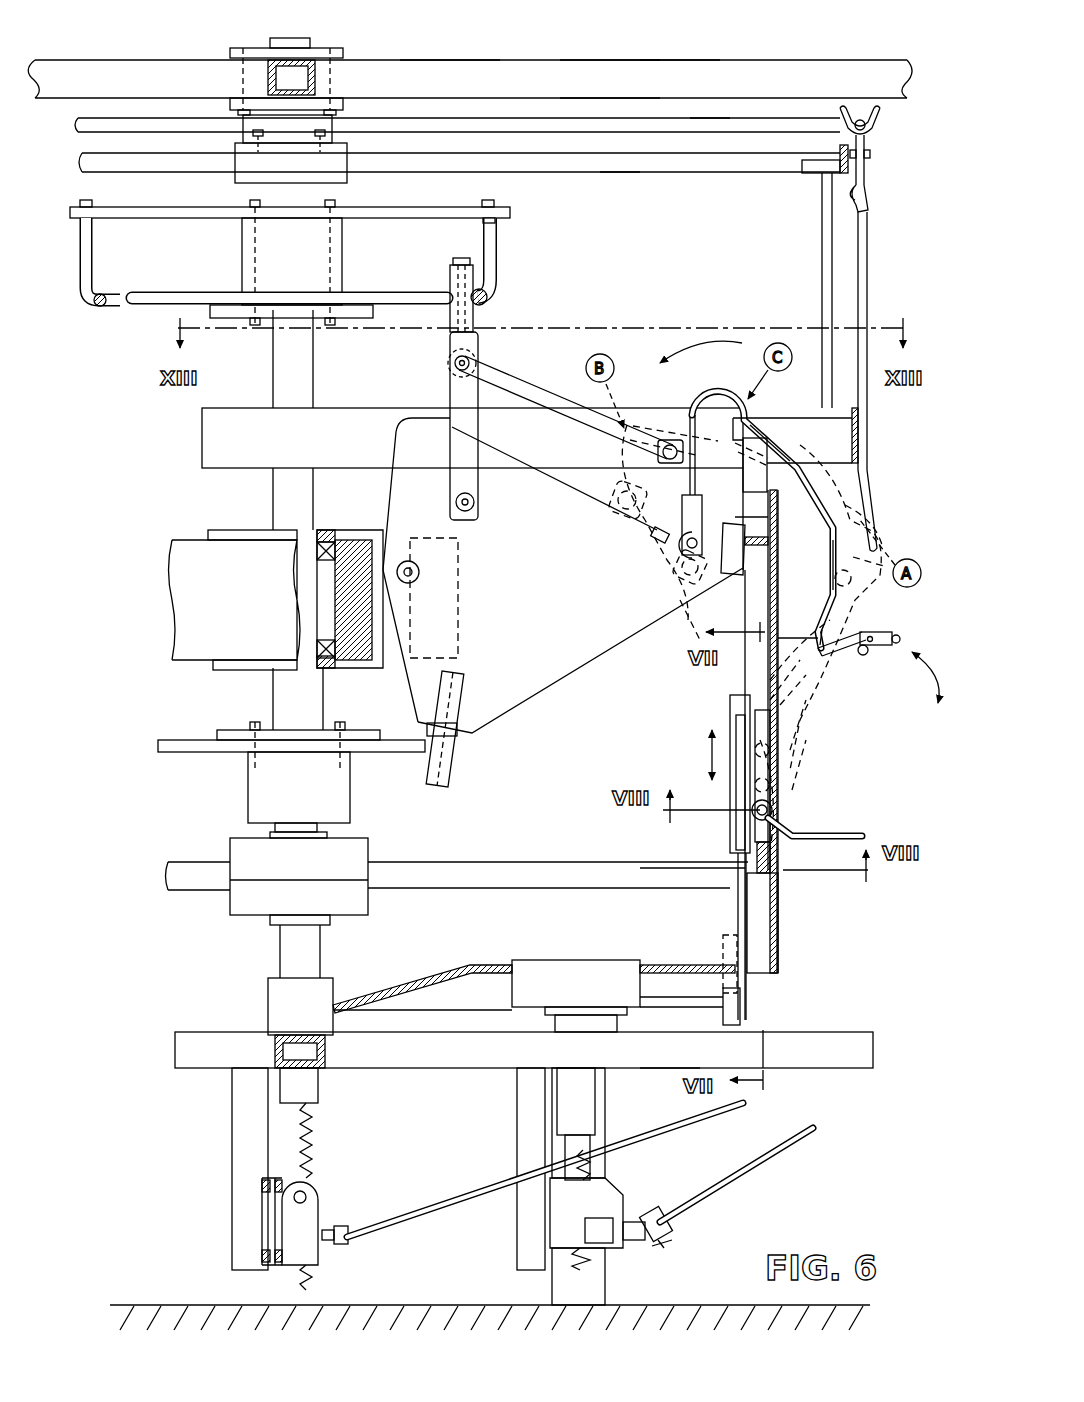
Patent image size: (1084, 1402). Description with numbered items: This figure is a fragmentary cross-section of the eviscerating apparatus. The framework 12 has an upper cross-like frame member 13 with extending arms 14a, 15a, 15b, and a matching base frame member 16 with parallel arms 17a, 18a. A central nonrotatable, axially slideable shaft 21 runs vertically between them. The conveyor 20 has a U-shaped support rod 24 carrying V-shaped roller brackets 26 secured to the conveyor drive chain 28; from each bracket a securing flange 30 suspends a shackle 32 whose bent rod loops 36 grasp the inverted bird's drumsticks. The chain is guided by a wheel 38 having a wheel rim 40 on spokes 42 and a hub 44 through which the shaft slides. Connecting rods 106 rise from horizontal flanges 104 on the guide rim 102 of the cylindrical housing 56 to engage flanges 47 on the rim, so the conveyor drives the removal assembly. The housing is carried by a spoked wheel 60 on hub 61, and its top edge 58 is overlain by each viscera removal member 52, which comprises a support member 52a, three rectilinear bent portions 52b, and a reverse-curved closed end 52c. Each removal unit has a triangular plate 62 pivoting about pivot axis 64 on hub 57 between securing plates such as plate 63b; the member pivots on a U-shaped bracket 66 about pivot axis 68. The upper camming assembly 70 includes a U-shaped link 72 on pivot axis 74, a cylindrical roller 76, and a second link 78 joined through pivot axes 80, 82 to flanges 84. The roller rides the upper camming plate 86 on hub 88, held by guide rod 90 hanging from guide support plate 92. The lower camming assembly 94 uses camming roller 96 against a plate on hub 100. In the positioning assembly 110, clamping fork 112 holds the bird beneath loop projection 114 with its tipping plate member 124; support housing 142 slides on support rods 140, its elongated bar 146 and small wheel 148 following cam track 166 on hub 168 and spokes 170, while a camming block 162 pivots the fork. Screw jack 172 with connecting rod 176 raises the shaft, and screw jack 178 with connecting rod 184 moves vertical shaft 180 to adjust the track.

The framework 12 is at (682, 59).
The upper cross-like frame member 13 is at (437, 58).
The extending arm 14a is at (312, 64).
The extending arm 15a is at (610, 79).
The extending arm 15b is at (132, 70).
The base frame member 16 is at (477, 1070).
The extending arm 17a is at (332, 1068).
The extending arm 18a is at (646, 1068).
The conveyor 20 is at (706, 117).
The central shaft 21 is at (285, 358).
The support rod 24 is at (470, 118).
The roller bracket 26 is at (876, 125).
The conveyor drive chain 28 is at (870, 156).
The securing flange 30 is at (866, 176).
The shackle 32 is at (868, 236).
The bent rod loop 36 is at (875, 526).
The wheel 38 is at (614, 173).
The wheel rim 40 is at (840, 150).
The spoke 42 is at (685, 166).
The hub 44 is at (345, 178).
The flange 47 is at (812, 166).
The viscera removal member 52 is at (721, 396).
The support member 52a is at (756, 422).
The bent portion 52b is at (840, 506).
The closed end of loop 52c is at (815, 622).
The housing 56 is at (782, 947).
The hub 57 is at (276, 600).
The top edge 58 is at (770, 491).
The spoked wheel 60 is at (374, 905).
The hub 61 is at (299, 881).
The triangular plate 62 is at (472, 570).
The securing plate 63b is at (400, 540).
The pivot axis 64 is at (420, 570).
The U-shaped bracket 66 is at (685, 548).
The pivot axis 68 is at (690, 556).
The upper camming assembly 70 is at (538, 330).
The link 72 is at (452, 396).
The pivot axis 74 is at (475, 503).
The cylindrical roller 76 is at (472, 313).
The second link 78 is at (548, 396).
The pivot axis 80 is at (470, 362).
The pivot axis 82 is at (665, 442).
The flange 84 is at (692, 420).
The upper camming plate 86 is at (384, 296).
The hub 88 is at (291, 268).
The guide rod 90 is at (495, 290).
The guide support plate 92 is at (185, 218).
The lower camming assembly 94 is at (406, 809).
The camming roller 96 is at (456, 758).
The hub 100 is at (291, 780).
The guide rim 102 is at (860, 440).
The horizontal flange 104 is at (792, 440).
The connecting rod 106 is at (822, 228).
The positioning assembly 110 is at (797, 886).
The clamping fork 112 is at (862, 834).
The loop projection 114 is at (893, 634).
The plate member 124 is at (864, 656).
The support rod 140 is at (715, 632).
The support housing 142 is at (730, 711).
The elongated bar 146 is at (738, 908).
The small wheel 148 is at (745, 1025).
The camming block 162 is at (766, 726).
The cam track 166 is at (482, 966).
The hub 168 is at (560, 962).
The spoke 170 is at (700, 992).
The screw jack 172 is at (326, 1177).
The connecting rod 176 is at (440, 1210).
The screw jack 178 is at (611, 1196).
The vertical shaft 180 is at (586, 1100).
The connecting rod 184 is at (748, 1176).